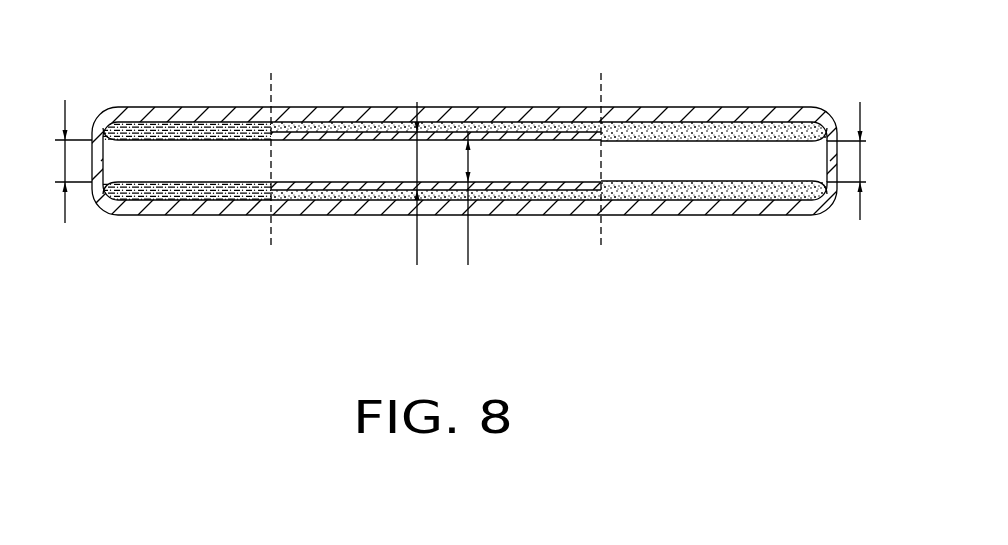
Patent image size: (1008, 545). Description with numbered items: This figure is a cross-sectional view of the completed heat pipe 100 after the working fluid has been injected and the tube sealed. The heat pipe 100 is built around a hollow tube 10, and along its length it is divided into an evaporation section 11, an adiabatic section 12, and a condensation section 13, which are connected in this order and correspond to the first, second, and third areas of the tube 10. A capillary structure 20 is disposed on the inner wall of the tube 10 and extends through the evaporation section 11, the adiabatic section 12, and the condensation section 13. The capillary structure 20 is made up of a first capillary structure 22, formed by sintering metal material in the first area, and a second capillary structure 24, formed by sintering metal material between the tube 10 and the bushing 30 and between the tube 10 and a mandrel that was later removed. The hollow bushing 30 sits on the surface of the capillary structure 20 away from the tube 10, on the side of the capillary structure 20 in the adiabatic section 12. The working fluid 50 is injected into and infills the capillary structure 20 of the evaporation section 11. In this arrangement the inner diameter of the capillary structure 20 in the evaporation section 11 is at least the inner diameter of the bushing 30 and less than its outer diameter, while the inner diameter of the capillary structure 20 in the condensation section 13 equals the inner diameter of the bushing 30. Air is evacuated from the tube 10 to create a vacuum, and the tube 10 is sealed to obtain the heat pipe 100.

The heat pipe 100 is at (220, 28).
The tube 10 is at (794, 114).
The evaporation section 11 is at (213, 155).
The adiabatic section 12 is at (506, 153).
The condensation section 13 is at (726, 75).
The capillary structure 20 is at (377, 225).
The first capillary structure 22 is at (193, 188).
The second capillary structure 24 is at (382, 191).
The bushing 30 is at (487, 127).
The working fluid 50 is at (133, 126).